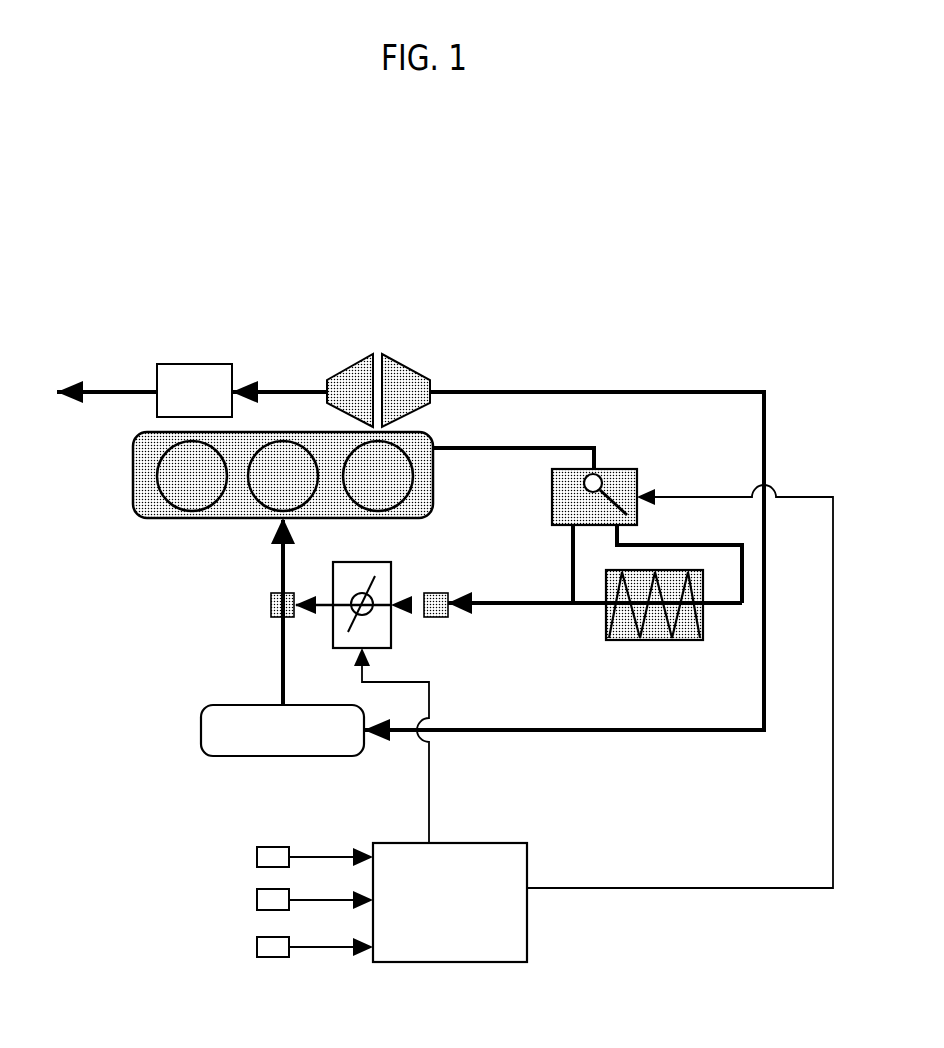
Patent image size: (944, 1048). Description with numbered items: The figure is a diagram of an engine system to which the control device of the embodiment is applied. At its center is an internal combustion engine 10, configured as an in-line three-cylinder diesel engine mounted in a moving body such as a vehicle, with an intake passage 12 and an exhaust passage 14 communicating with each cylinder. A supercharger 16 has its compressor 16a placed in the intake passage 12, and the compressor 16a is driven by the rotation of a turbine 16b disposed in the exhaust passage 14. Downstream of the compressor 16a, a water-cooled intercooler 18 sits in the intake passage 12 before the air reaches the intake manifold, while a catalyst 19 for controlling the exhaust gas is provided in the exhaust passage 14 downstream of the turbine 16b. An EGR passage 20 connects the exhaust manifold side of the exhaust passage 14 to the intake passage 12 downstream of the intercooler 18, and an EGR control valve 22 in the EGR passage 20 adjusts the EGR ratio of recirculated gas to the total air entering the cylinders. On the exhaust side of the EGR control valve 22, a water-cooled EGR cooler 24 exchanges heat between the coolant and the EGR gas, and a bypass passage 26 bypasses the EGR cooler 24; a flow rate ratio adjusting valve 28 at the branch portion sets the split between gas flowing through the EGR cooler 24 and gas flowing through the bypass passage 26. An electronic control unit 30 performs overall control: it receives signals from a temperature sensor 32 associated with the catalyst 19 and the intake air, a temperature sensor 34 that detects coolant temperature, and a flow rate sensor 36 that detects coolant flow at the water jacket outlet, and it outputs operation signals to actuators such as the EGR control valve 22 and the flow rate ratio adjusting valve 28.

The internal combustion engine 10 is at (133, 481).
The intake passage 12 is at (517, 391).
The exhaust passage 14 is at (284, 388).
The supercharger 16 is at (382, 335).
The compressor 16a is at (412, 361).
The turbine 16b is at (347, 368).
The intercooler 18 is at (275, 757).
The catalyst 19 is at (200, 364).
The EGR passage 20 is at (518, 446).
The EGR control valve 22 is at (370, 560).
The EGR cooler 24 is at (655, 642).
The bypass passage 26 is at (573, 560).
The flow rate ratio adjusting valve 28 is at (622, 468).
The electronic control unit 30 is at (529, 850).
The temperature sensor 32 is at (255, 855).
The temperature sensor 34 is at (255, 898).
The flow rate sensor 36 is at (255, 945).